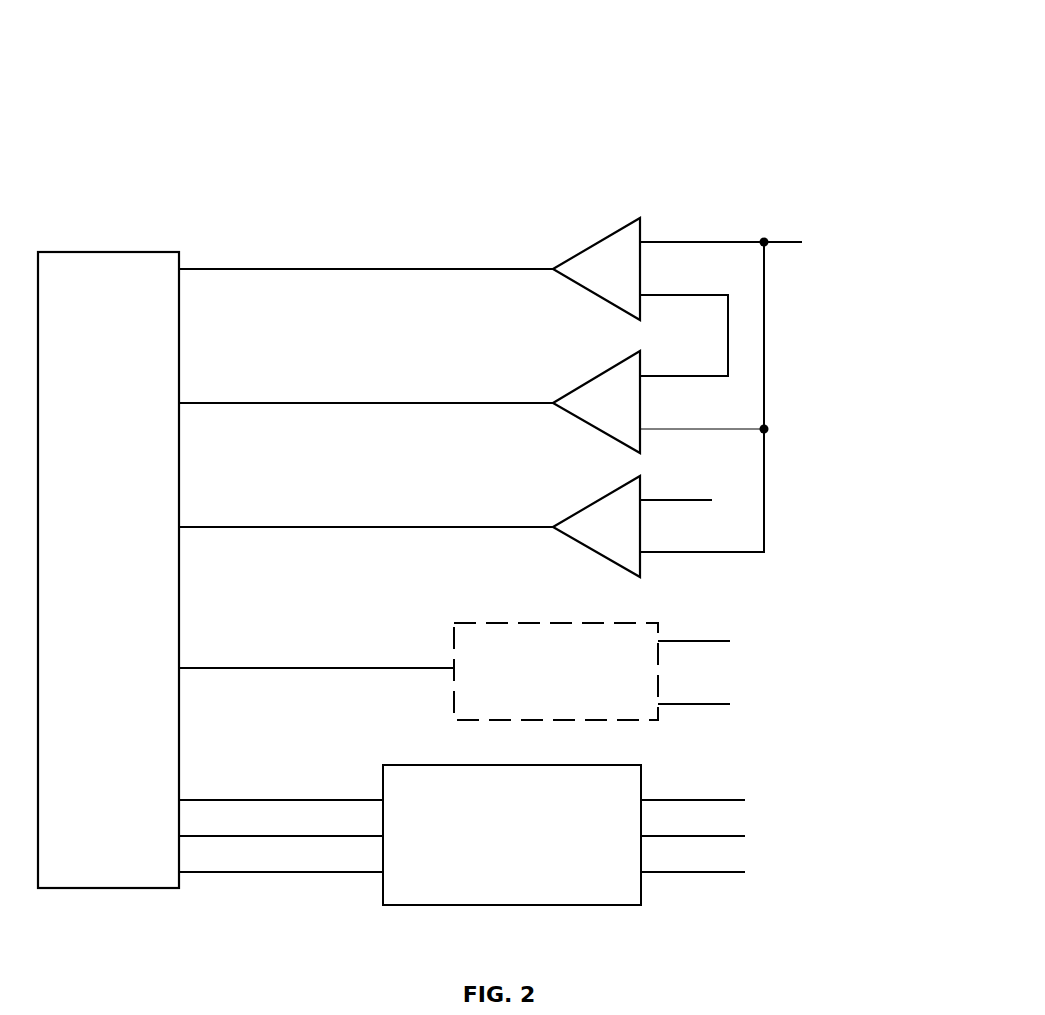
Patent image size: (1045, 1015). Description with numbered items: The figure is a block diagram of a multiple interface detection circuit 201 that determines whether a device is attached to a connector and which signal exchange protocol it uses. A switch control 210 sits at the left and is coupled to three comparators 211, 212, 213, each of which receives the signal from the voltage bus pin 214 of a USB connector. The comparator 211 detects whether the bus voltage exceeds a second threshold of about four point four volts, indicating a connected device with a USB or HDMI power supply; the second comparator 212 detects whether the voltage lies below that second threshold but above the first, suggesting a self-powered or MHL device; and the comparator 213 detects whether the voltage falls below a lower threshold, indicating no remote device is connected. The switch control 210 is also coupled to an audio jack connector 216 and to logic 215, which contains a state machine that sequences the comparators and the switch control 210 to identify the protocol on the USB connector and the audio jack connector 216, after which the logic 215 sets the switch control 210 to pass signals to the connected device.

The multiple interface detection circuit 201 is at (438, 58).
The switch control 210 is at (83, 253).
The comparator 211 is at (573, 251).
The second comparator 212 is at (577, 385).
The comparator 213 is at (577, 508).
The voltage bus pin 214 is at (841, 219).
The logic 215 is at (613, 765).
The audio jack connector 216 is at (676, 616).